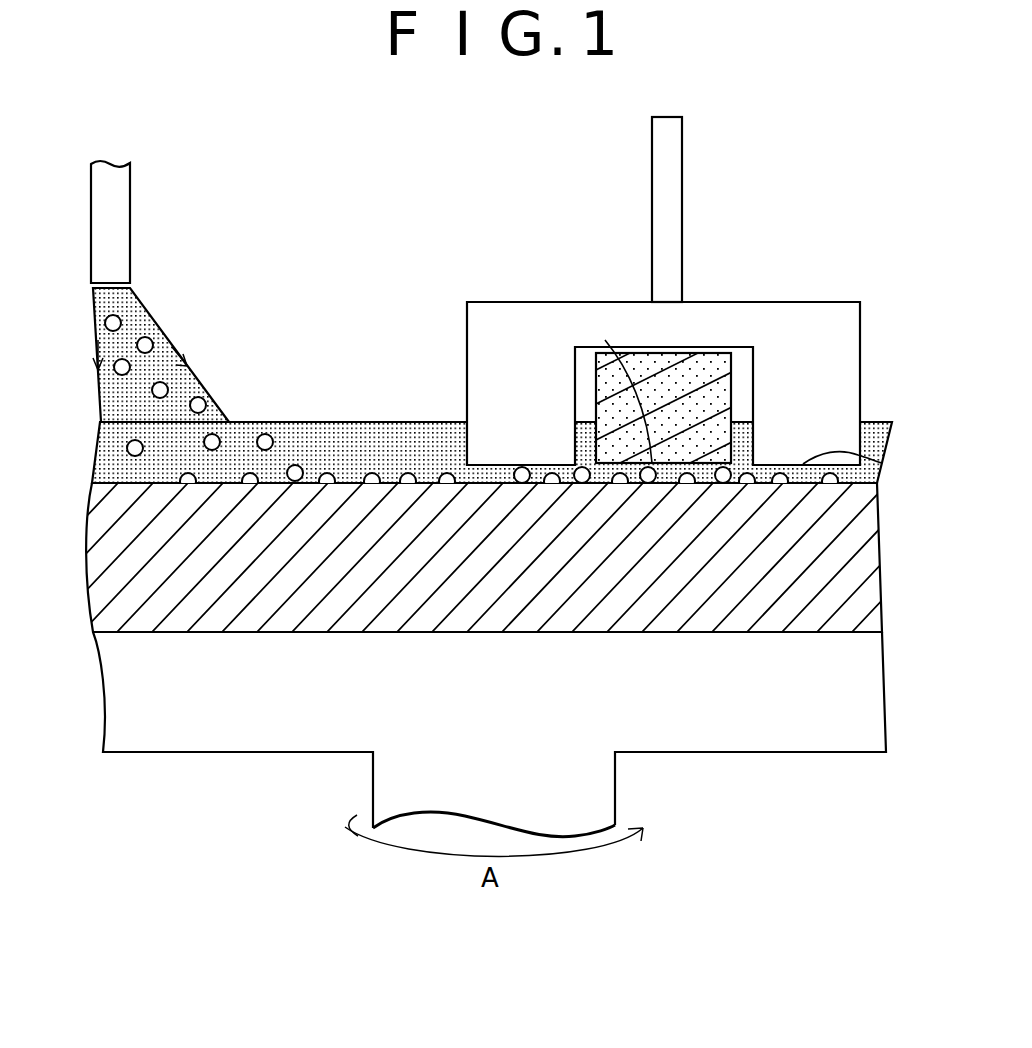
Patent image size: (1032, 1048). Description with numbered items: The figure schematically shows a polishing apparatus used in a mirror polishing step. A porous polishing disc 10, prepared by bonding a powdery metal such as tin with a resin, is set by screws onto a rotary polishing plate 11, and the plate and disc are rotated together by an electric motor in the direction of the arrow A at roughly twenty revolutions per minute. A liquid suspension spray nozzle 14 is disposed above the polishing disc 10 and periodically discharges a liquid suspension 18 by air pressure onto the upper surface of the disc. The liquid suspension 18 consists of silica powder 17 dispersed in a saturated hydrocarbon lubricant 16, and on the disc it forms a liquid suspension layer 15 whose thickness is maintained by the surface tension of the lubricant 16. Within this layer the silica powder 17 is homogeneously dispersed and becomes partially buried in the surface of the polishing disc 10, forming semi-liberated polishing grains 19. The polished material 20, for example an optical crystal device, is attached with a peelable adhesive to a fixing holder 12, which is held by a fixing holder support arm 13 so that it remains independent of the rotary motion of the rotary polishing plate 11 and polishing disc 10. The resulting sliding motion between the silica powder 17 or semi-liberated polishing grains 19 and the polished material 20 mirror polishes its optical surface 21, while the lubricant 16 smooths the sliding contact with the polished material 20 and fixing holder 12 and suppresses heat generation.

The polishing disc 10 is at (852, 575).
The rotary polishing plate 11 is at (820, 743).
The fixing holder 12 is at (820, 325).
The fixing holder support arm 13 is at (670, 158).
The liquid suspension spray nozzle 14 is at (110, 217).
The liquid suspension layer 15 is at (90, 422).
The saturated hydrocarbon lubricant 16 is at (418, 440).
The silica powder 17 is at (205, 402).
The liquid suspension 18 is at (172, 316).
The semi-liberated polishing grains 19 is at (880, 463).
The polished material 20 is at (700, 363).
The optical surface 21 is at (605, 340).